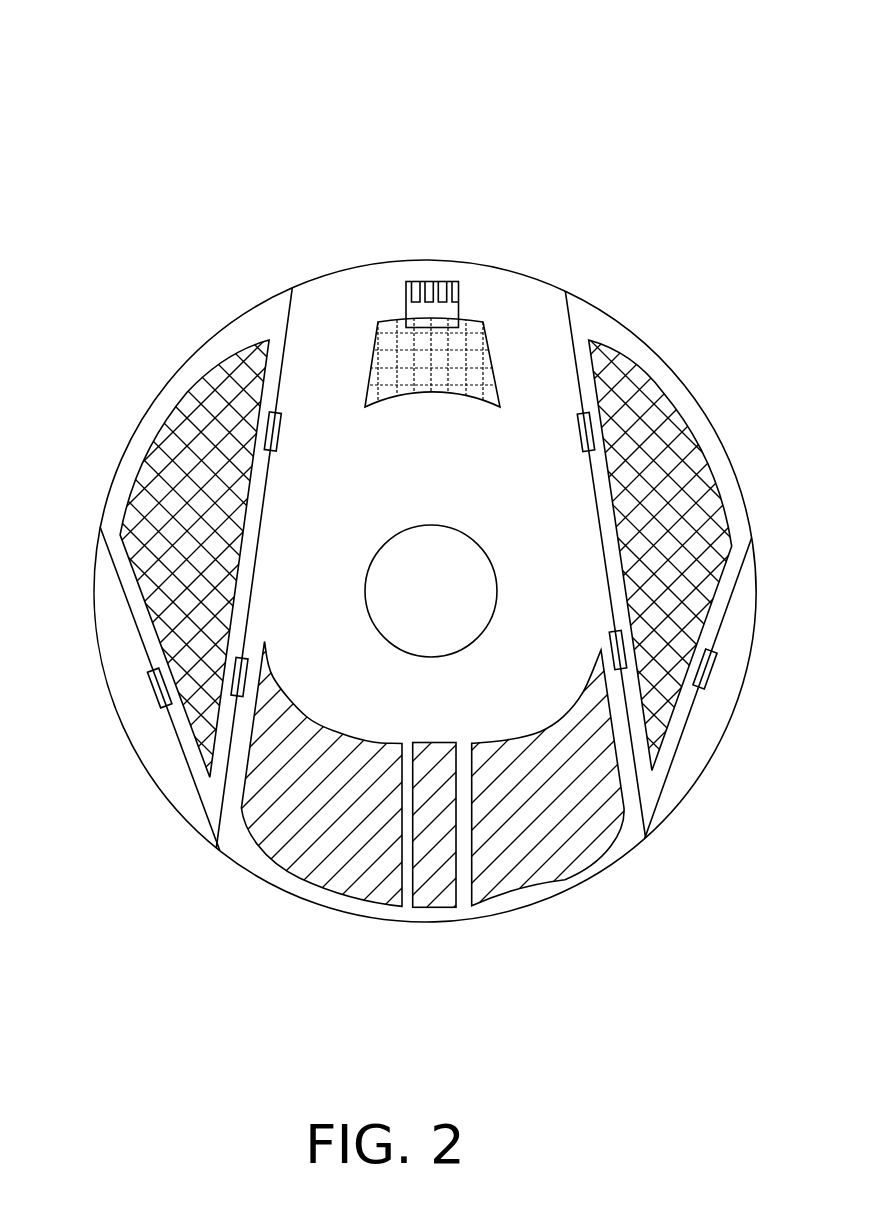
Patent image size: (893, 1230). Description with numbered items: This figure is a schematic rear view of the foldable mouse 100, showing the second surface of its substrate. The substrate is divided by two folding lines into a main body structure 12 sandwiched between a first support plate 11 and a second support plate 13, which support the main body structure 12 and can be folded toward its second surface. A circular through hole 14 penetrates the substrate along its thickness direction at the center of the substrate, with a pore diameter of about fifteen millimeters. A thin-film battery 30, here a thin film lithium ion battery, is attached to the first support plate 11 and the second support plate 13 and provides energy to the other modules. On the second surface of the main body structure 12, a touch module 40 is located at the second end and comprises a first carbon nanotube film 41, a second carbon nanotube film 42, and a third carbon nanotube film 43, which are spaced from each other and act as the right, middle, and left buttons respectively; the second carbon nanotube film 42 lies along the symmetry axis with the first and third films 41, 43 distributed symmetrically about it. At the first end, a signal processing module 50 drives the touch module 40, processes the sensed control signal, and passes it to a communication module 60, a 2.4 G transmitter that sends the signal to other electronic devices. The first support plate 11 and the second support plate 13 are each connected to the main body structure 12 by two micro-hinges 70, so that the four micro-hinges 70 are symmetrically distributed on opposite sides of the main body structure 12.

The foldable mouse 100 is at (252, 52).
The first support plate 11 is at (255, 320).
The main body structure 12 is at (530, 300).
The second support plate 13 is at (588, 318).
The through hole 14 is at (463, 575).
The thin-film battery 30 is at (683, 498).
The touch module 40 is at (432, 827).
The first carbon nanotube film 41 is at (340, 852).
The second carbon nanotube film 42 is at (438, 852).
The third carbon nanotube film 43 is at (550, 815).
The signal processing module 50 is at (391, 338).
The communication module 60 is at (434, 310).
The micro-hinges 70 is at (233, 683).